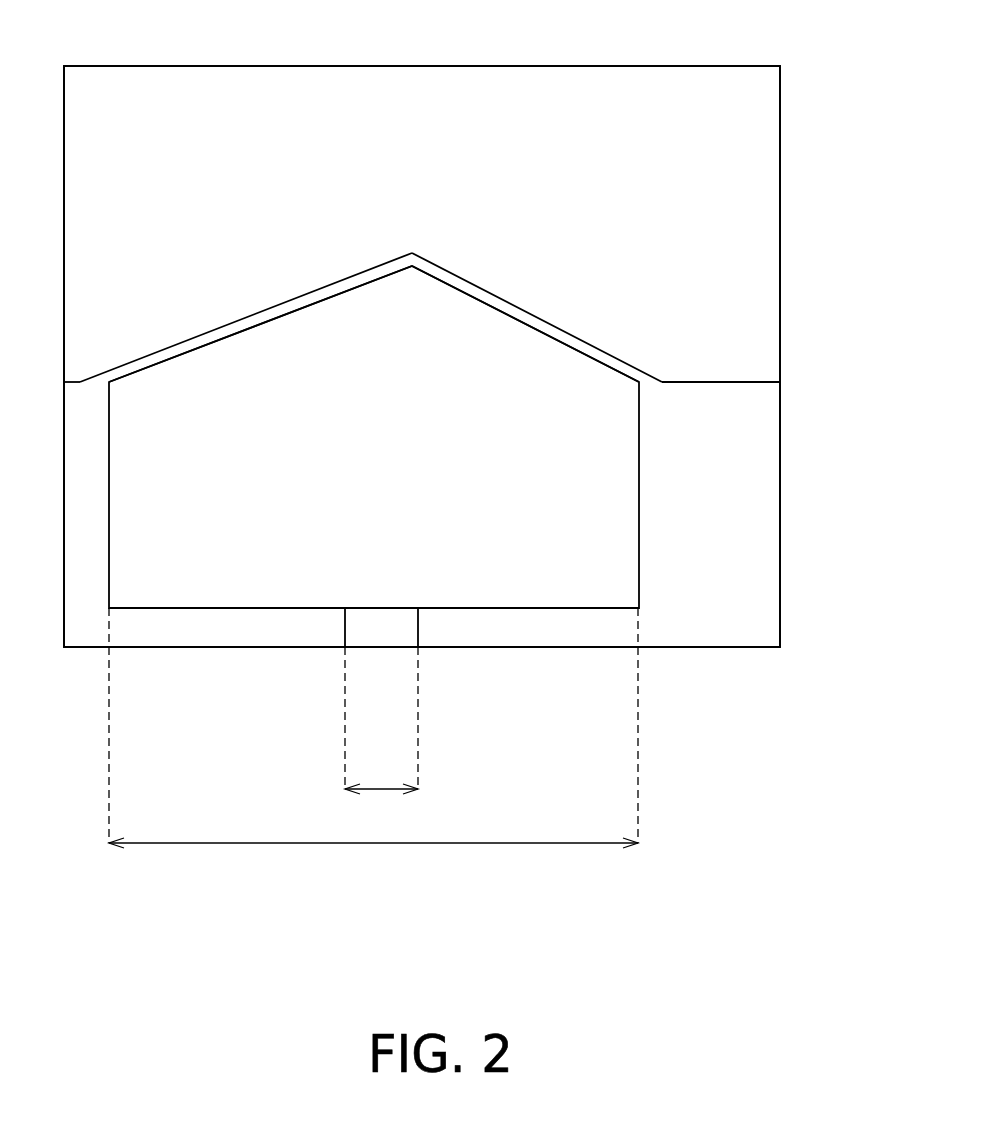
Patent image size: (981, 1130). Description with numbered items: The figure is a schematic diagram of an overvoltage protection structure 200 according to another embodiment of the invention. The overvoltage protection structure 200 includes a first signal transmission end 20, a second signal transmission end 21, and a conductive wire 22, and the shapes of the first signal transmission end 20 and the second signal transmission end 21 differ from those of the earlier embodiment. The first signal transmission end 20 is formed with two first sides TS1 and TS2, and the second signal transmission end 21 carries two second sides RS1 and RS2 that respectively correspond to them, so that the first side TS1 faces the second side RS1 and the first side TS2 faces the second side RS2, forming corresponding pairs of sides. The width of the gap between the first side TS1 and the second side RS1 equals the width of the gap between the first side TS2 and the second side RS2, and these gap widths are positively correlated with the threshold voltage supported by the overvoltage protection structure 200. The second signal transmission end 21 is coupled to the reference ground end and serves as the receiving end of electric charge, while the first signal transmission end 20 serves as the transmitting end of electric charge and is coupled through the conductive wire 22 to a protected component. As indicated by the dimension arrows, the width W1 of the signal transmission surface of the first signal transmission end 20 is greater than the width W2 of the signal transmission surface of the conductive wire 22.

The second signal transmission end 21 is at (505, 88).
The first signal transmission end 20 is at (540, 597).
The conductive wire 22 is at (383, 630).
The second side RS1 is at (235, 320).
The second side RS2 is at (565, 332).
The first side TS1 is at (222, 340).
The first side TS2 is at (533, 330).
The width of signal transmission surface of first signal transmission end W1 is at (373, 728).
The width of signal transmission surface of conductive wire W2 is at (381, 720).
The overvoltage protection structure 200 is at (781, 871).